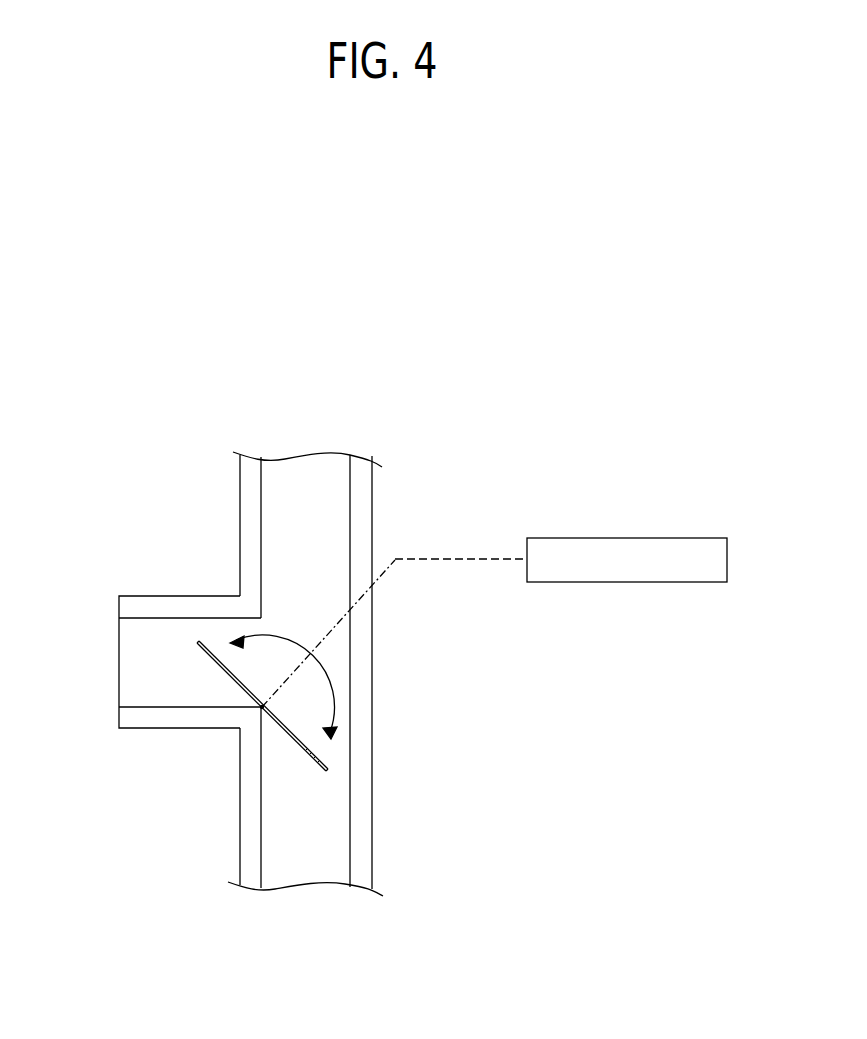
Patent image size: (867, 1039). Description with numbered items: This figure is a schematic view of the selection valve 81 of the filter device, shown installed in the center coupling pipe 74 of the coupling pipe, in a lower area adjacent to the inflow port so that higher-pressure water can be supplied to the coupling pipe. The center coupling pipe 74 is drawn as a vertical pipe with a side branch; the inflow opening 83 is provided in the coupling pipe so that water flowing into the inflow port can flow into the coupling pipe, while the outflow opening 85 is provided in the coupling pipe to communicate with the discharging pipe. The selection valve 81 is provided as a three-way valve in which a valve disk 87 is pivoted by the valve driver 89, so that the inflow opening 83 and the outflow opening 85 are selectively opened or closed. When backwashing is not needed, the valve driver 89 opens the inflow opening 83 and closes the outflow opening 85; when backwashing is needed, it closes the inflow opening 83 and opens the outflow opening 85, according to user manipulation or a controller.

The center coupling pipe 74 is at (240, 523).
The selection valve 81 is at (382, 662).
The inflow opening 83 is at (131, 663).
The outflow opening 85 is at (275, 789).
The valve disk 87 is at (300, 748).
The valve driver 89 is at (628, 538).